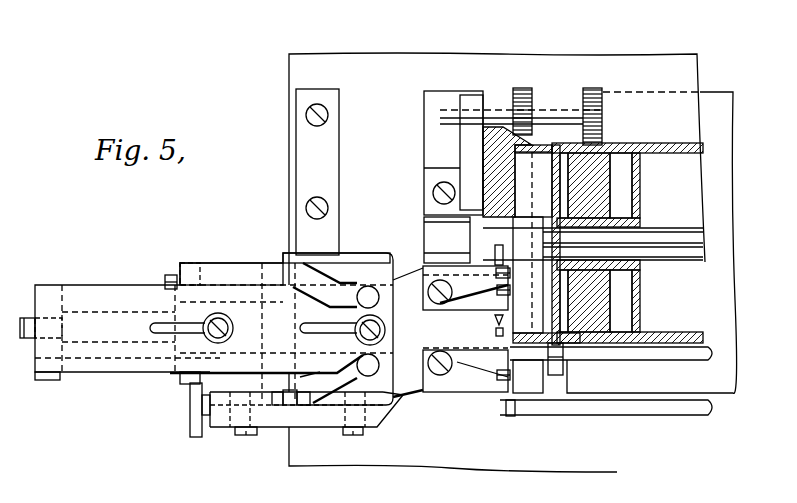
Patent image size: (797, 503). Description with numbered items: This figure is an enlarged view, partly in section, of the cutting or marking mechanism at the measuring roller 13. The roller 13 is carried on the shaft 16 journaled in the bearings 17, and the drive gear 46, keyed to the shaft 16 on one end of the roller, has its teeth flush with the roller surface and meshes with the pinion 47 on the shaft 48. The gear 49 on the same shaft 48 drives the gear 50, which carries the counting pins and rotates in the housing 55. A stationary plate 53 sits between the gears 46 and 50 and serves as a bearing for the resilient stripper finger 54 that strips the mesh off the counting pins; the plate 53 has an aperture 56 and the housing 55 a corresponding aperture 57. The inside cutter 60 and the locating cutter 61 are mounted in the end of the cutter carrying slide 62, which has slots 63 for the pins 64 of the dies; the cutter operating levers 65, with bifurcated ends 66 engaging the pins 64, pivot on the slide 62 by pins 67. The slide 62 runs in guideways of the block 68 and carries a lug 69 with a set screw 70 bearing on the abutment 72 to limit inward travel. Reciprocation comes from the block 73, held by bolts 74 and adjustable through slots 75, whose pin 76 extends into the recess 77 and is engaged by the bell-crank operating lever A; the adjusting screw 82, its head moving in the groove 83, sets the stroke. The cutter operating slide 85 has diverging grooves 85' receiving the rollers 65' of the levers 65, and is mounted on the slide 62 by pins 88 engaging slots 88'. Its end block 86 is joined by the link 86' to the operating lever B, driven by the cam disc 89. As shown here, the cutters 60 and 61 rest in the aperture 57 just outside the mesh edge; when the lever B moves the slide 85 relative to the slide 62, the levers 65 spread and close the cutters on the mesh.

The measuring roller 13 is at (663, 145).
The shaft 16 is at (675, 237).
The bearings 17 is at (424, 215).
The drive gear 46 is at (595, 182).
The pinion 47 is at (603, 130).
The shaft 48 is at (547, 117).
The gear 49 is at (522, 88).
The gear 50 is at (533, 242).
The stationary plate 53 is at (560, 145).
The resilient stripper finger 54 is at (545, 140).
The housing 55 is at (493, 133).
The aperture 56 is at (600, 295).
The aperture 57 is at (515, 417).
The inside cutter 60 is at (504, 324).
The locating cutter 61 is at (502, 338).
The cutter carrying slide 62 is at (393, 262).
The slots 63 is at (508, 290).
The pins 64 is at (510, 272).
The cutter operating levers 65 is at (395, 314).
The rollers 65' is at (352, 328).
The bifurcated ends 66 is at (490, 262).
The pins 67 is at (447, 305).
The block 68 is at (213, 305).
The lug 69 is at (193, 268).
The set screw 70 is at (165, 278).
The abutment 72 is at (275, 262).
The block 73 is at (327, 420).
The bolts 74 is at (235, 432).
The slots 75 is at (400, 428).
The pin 76 is at (330, 393).
The recess 77 is at (280, 405).
The adjusting screw 82 is at (190, 410).
The groove 83 is at (182, 378).
The cutter operating slide 85 is at (266, 349).
The diverging grooves 85' is at (336, 300).
The block 86 is at (115, 314).
The link 86' is at (127, 383).
The pins 88 is at (234, 324).
The slots 88' is at (332, 324).
The cam disc 89 is at (150, 325).
The operating lever A is at (290, 405).
The operating lever B is at (300, 377).